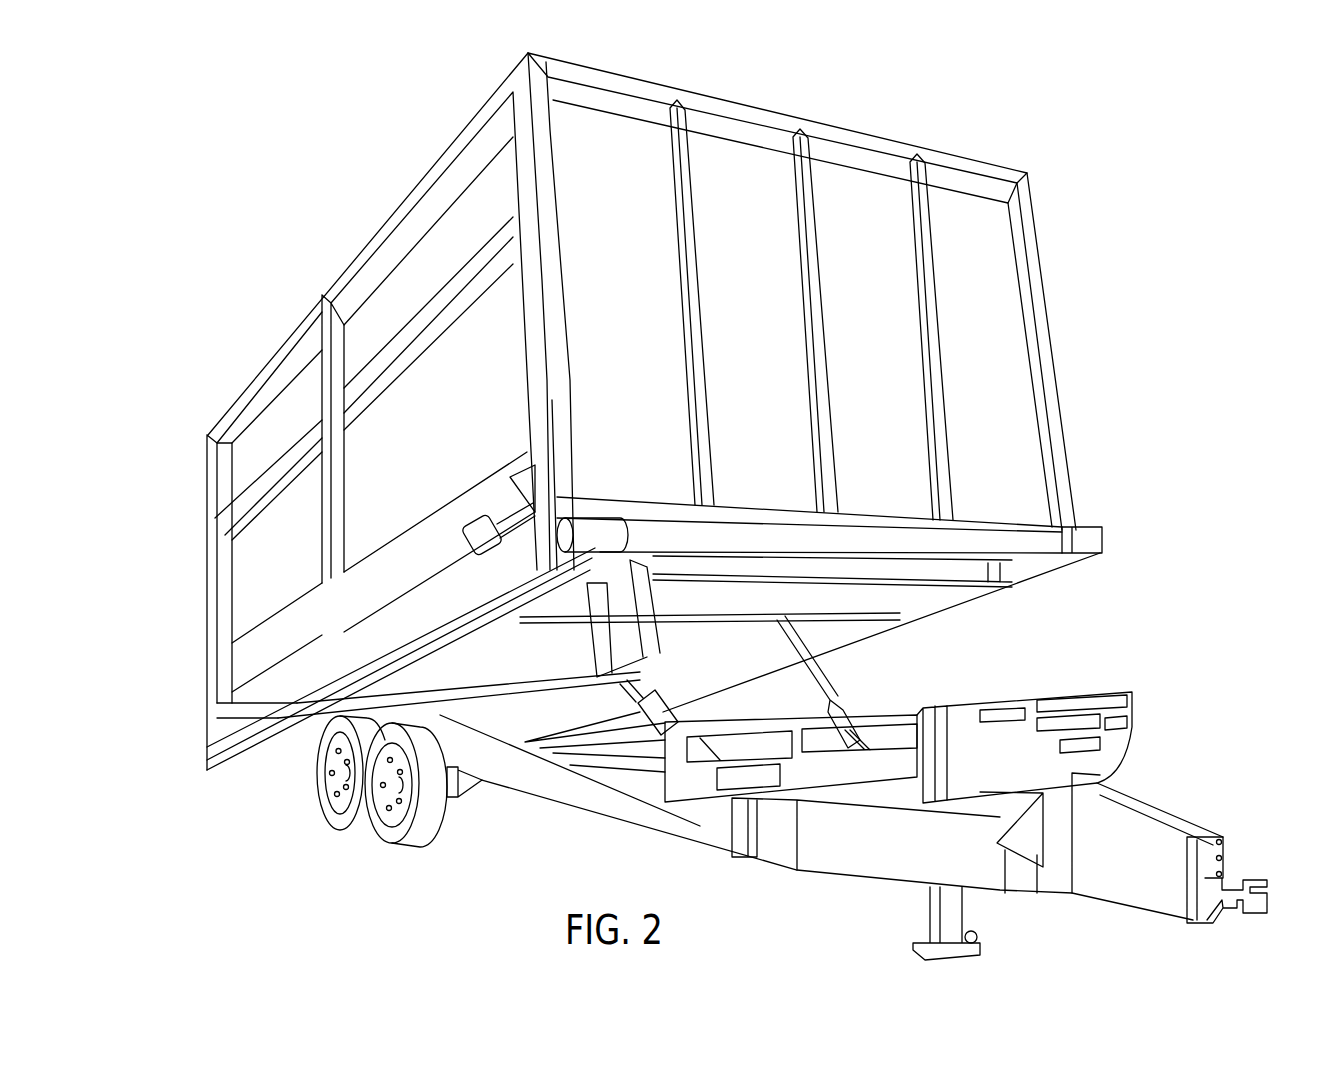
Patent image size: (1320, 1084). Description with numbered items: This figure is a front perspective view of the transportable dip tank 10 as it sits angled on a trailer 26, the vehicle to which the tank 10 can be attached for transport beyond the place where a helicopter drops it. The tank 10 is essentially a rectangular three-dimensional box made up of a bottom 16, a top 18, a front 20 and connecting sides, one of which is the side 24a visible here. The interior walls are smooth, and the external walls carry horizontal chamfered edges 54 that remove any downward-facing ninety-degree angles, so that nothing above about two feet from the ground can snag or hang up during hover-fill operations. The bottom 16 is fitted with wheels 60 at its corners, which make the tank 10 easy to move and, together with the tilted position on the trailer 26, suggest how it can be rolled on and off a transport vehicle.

The transportable dip tank 10 is at (1070, 167).
The bottom 16 is at (855, 625).
The top 18 is at (690, 77).
The front 20 is at (1016, 352).
The connecting side 24a is at (245, 580).
The trailer 26 is at (1170, 818).
The horizontal chamfered edges 54 is at (425, 213).
The wheels 60 is at (595, 538).